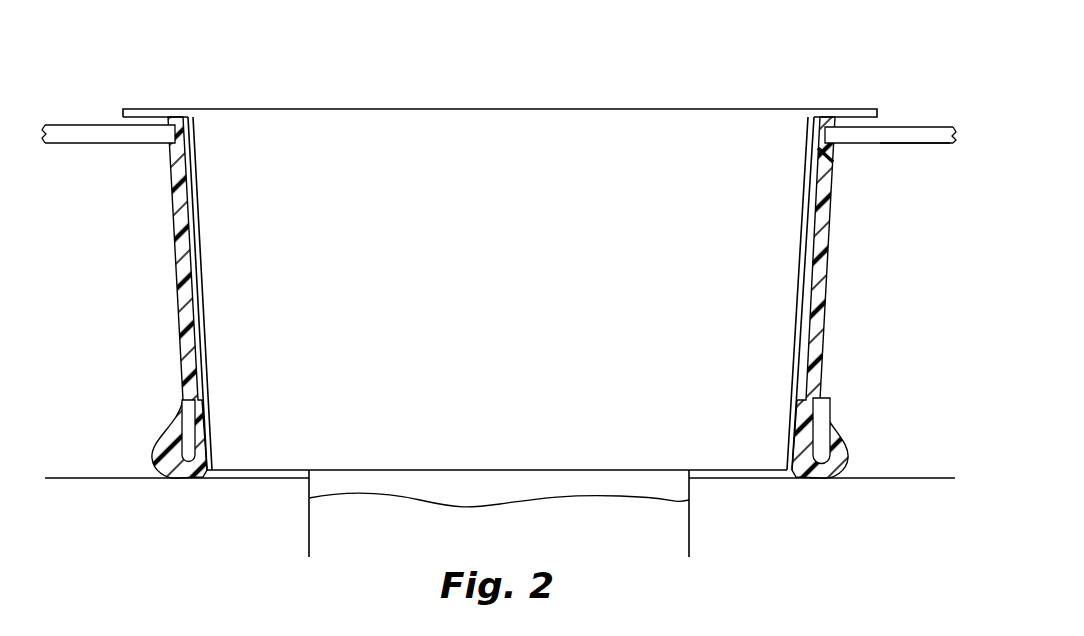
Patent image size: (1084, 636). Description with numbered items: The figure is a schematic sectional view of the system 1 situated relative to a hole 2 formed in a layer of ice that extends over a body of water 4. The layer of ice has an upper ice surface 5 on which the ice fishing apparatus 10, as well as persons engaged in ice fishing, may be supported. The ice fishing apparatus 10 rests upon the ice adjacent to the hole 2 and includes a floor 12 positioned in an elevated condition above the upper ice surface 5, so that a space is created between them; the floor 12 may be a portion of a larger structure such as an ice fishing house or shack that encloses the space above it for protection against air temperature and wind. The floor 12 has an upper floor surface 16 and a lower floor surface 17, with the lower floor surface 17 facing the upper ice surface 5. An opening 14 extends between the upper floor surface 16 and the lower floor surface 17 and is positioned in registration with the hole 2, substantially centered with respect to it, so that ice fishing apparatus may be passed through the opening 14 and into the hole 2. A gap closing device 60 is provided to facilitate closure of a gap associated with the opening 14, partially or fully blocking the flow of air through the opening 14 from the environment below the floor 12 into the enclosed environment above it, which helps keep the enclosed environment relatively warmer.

The system 1 is at (574, 101).
The ice fishing apparatus 10 is at (424, 102).
The gap closing device 60 is at (182, 272).
The floor 12 is at (137, 138).
The upper floor surface 16 is at (893, 127).
The opening 14 is at (830, 158).
The lower floor surface 17 is at (937, 150).
The upper ice surface 5 is at (140, 477).
The hole 2 is at (309, 520).
The body of water 4 is at (487, 504).